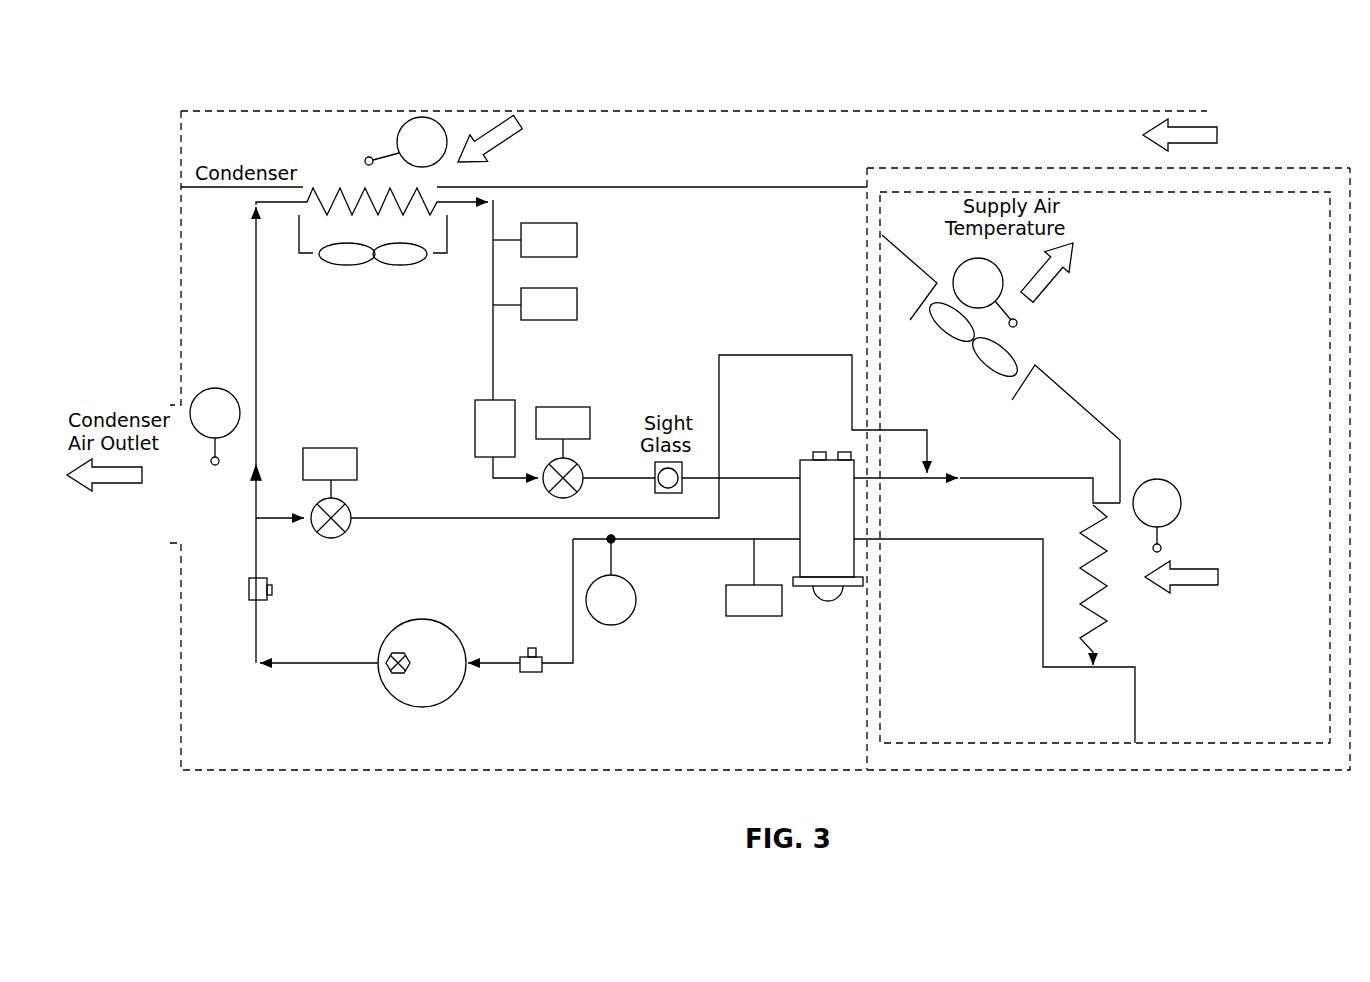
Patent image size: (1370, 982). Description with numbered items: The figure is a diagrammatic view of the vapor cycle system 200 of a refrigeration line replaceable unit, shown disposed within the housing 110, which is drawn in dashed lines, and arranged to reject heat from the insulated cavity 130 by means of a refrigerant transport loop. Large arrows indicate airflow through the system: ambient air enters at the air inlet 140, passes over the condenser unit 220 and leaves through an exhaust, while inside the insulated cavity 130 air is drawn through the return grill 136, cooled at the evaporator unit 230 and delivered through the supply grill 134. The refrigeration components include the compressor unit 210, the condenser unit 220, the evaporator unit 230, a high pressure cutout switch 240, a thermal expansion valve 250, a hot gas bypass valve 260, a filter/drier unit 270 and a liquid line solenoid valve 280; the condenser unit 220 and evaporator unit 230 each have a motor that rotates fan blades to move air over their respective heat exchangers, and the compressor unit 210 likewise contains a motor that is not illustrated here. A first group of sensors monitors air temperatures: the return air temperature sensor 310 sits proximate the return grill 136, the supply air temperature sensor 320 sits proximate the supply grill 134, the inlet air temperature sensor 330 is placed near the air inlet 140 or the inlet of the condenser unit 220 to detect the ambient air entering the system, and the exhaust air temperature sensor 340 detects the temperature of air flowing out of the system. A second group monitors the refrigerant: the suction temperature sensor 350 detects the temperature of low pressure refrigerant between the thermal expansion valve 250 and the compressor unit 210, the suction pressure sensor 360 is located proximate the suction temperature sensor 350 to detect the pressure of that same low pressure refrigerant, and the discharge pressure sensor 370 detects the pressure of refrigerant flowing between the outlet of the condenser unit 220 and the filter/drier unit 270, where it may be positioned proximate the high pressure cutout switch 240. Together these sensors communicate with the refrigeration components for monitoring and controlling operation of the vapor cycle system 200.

The vapor cycle system 200 is at (154, 70).
The housing 110 is at (1285, 770).
The insulated cavity 130 is at (1108, 469).
The supply grill 134 is at (1024, 356).
The return grill 136 is at (1177, 640).
The air inlet 140 is at (1275, 112).
The compressor unit 210 is at (376, 690).
The condenser unit 220 is at (290, 258).
The evaporator unit 230 is at (970, 358).
The high pressure cutout switch 240 is at (745, 296).
The thermal expansion valve 250 is at (838, 598).
The hot gas bypass valve 260 is at (333, 540).
The filter/drier unit 270 is at (475, 408).
The liquid line solenoid valve 280 is at (578, 492).
The return air temperature sensor 310 is at (1163, 478).
The supply air temperature sensor 320 is at (960, 262).
The inlet air temperature sensor 330 is at (432, 117).
The exhaust air temperature sensor 340 is at (213, 388).
The suction temperature sensor 350 is at (586, 600).
The suction pressure sensor 360 is at (726, 600).
The discharge pressure sensor 370 is at (548, 222).